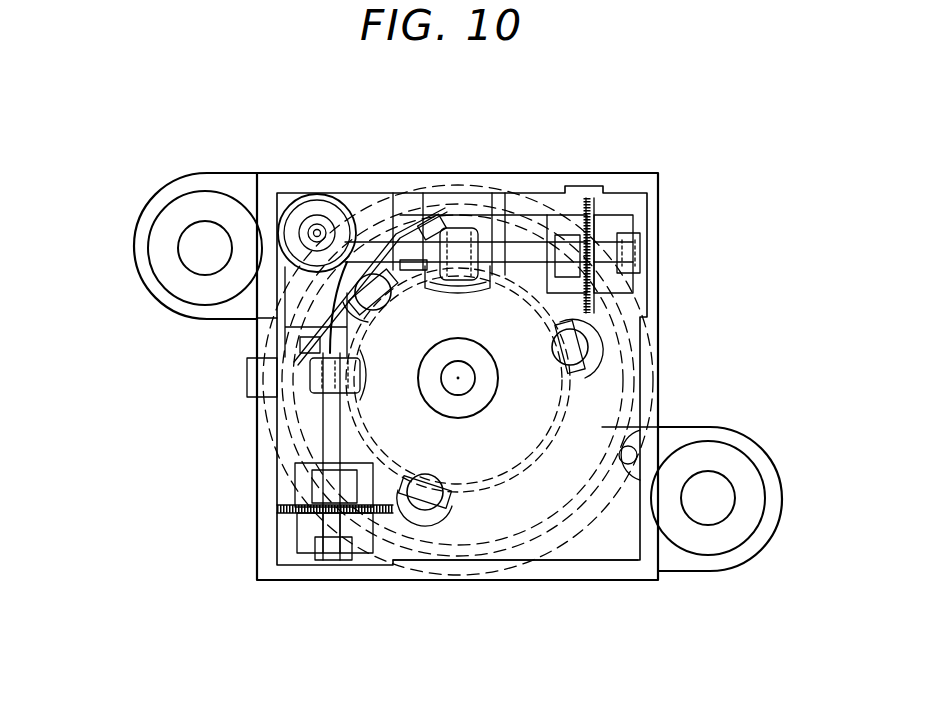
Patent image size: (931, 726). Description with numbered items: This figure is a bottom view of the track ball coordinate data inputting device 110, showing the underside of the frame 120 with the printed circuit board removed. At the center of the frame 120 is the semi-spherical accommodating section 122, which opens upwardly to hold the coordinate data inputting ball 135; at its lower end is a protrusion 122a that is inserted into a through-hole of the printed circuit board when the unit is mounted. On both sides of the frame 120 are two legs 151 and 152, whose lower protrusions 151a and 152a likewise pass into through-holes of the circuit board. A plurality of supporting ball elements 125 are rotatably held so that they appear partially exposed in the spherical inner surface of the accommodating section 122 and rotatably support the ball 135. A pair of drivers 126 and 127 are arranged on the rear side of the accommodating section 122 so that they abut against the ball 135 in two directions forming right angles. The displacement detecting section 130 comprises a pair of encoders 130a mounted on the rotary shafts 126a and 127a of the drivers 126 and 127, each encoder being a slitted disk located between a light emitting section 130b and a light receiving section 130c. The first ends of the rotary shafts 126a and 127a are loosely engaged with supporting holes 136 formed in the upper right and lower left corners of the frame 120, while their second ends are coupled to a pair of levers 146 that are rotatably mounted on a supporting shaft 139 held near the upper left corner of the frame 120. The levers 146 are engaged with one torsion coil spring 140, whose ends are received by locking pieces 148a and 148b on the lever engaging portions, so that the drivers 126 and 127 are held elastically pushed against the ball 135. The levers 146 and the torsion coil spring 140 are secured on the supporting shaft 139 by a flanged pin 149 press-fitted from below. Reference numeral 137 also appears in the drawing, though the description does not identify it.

The track ball coordinate data inputting device 110 is at (784, 142).
The frame 120 is at (623, 572).
The semi-spherical accommodating section 122 is at (628, 402).
The protrusion 122a is at (458, 418).
The supporting ball elements 125 is at (385, 303).
The driver 126 is at (475, 200).
The rotary shaft 126a is at (563, 215).
The driver 127 is at (320, 400).
The rotary shaft 127a is at (330, 440).
The displacement detecting section 130 is at (600, 205).
The encoder 130a is at (615, 235).
The light emitting section 130b is at (578, 205).
The light receiving section 130c is at (620, 290).
The coordinate data inputting ball 135 is at (547, 562).
The supporting hole 136 is at (640, 228).
The guide bar 137 is at (352, 555).
The supporting shaft 139 is at (305, 220).
The torsion coil spring 140 is at (442, 196).
The lever 146 is at (353, 200).
The locking piece 148a is at (297, 342).
The locking piece 148b is at (413, 192).
The flanged pin 149 is at (318, 240).
The leg 151 is at (720, 568).
The lower protrusion 151a is at (733, 465).
The leg 152 is at (167, 188).
The lower protrusion 152a is at (172, 220).